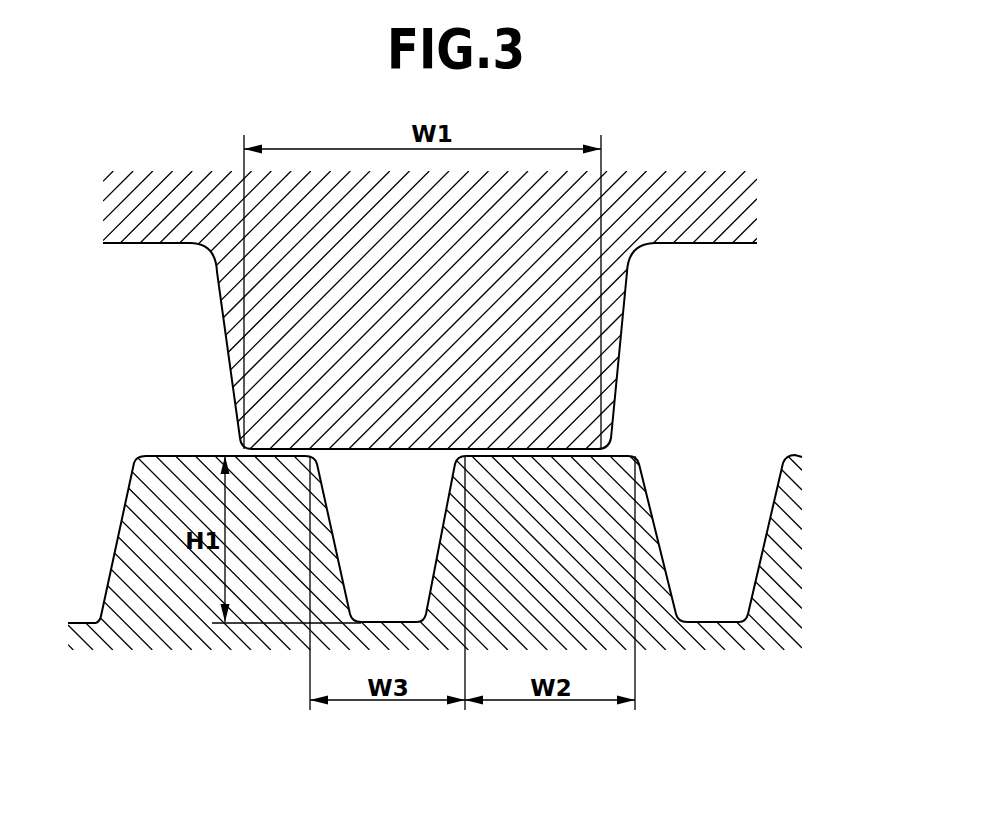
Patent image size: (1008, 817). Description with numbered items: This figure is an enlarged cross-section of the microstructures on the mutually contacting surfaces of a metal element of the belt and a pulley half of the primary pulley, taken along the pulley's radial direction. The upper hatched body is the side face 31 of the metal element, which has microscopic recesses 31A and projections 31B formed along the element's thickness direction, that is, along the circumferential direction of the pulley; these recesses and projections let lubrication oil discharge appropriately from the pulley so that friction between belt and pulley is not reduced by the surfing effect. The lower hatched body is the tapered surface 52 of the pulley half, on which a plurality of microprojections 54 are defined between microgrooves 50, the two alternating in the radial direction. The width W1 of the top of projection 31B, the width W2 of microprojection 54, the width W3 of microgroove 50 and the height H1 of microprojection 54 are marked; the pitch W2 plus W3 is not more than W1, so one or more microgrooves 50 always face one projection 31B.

The side face 31 is at (467, 363).
The recess 31A is at (703, 244).
The projection 31B is at (366, 455).
The microgroove 50 is at (465, 504).
The tapered surface 52 is at (797, 432).
The microprojection 54 is at (173, 463).